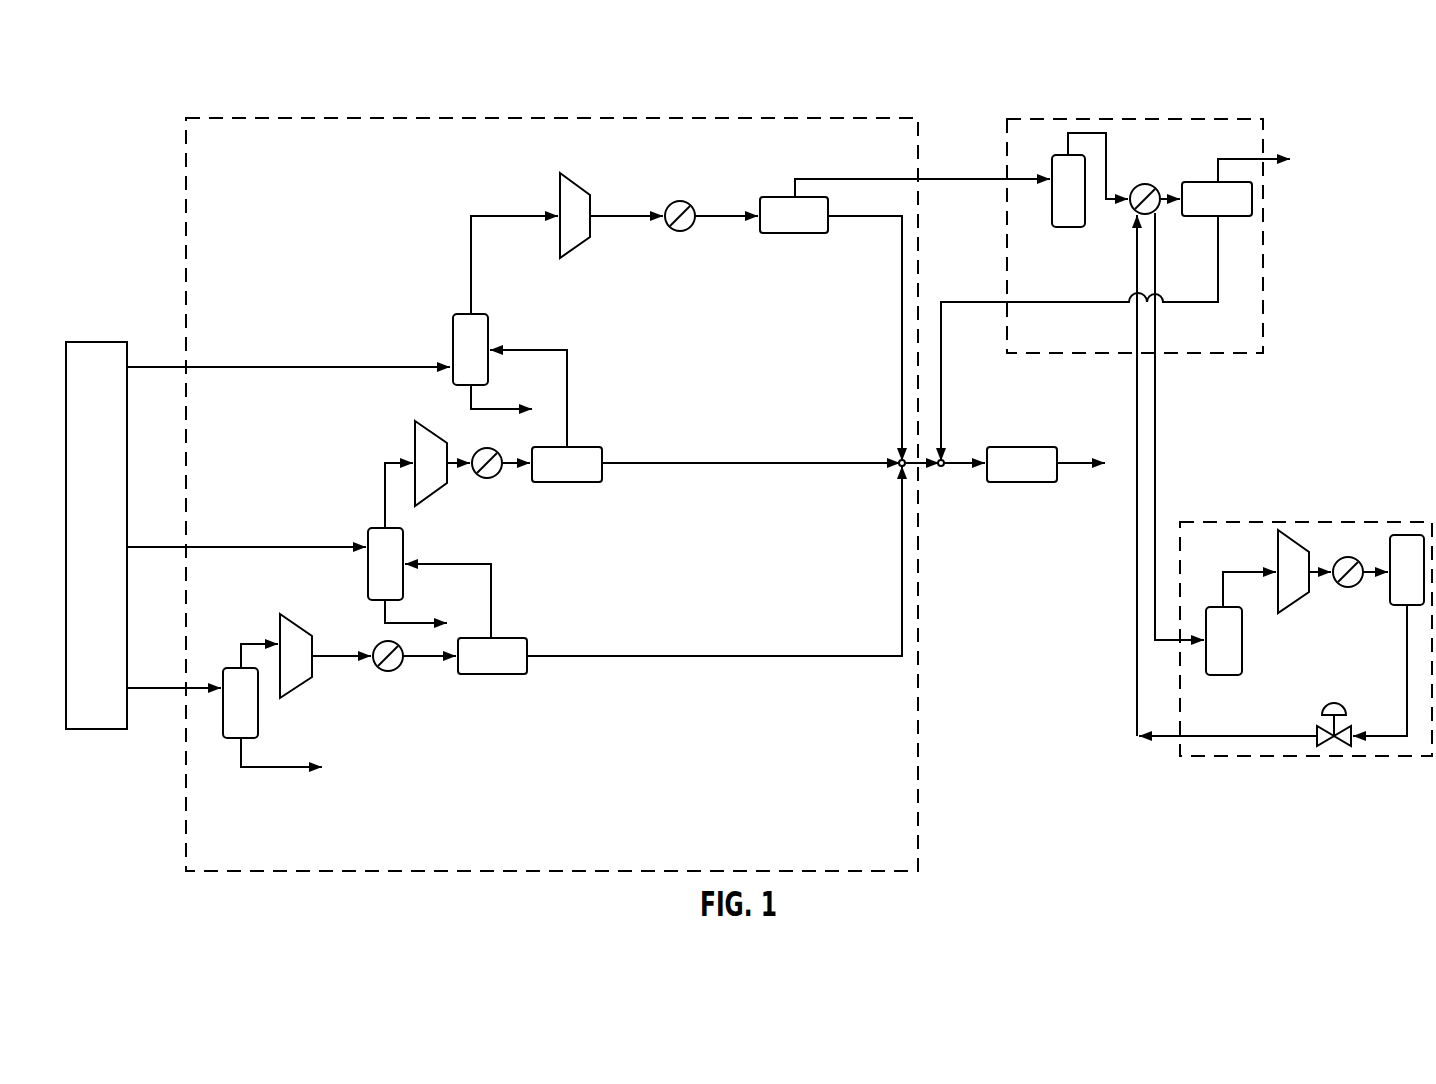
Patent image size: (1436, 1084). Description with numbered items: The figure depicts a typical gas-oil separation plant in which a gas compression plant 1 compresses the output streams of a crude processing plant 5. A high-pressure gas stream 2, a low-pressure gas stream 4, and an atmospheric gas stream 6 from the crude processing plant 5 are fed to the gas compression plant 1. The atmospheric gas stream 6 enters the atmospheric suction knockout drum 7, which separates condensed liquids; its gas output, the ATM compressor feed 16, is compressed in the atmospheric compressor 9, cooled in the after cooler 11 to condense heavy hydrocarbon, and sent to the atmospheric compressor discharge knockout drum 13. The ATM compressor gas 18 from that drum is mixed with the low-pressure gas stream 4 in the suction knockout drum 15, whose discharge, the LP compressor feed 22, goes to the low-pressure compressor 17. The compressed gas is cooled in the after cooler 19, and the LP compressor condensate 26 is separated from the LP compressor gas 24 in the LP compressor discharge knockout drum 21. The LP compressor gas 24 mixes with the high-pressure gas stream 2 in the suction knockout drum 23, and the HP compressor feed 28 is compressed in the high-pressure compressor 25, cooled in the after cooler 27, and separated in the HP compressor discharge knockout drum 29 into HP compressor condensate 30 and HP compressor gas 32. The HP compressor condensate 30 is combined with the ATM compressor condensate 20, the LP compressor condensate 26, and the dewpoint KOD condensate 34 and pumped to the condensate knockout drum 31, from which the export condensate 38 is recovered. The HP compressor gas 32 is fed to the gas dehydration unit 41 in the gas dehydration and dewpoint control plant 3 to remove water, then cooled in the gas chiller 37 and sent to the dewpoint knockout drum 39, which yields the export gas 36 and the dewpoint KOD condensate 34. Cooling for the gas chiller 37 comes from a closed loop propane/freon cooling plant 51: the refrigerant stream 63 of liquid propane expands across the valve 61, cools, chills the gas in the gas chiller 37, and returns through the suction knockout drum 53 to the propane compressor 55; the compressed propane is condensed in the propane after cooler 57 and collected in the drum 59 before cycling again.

The gas compression plant 1 is at (245, 117).
The high-pressure gas stream 2 is at (165, 367).
The gas dehydration and dewpoint control plant 3 is at (1040, 119).
The low-pressure gas stream 4 is at (165, 547).
The crude processing plant 5 is at (97, 342).
The atmospheric gas stream 6 is at (165, 688).
The atmospheric suction knockout drum 7 is at (258, 716).
The atmospheric compressor 9 is at (284, 615).
The after cooler 11 is at (388, 672).
The atmospheric compressor discharge knockout drum 13 is at (490, 675).
The suction knockout drum 15 is at (365, 537).
The ATM compressor feed 16 is at (248, 644).
The low-pressure compressor 17 is at (415, 433).
The ATM compressor gas 18 is at (491, 560).
The after cooler 19 is at (488, 480).
The ATM compressor condensate 20 is at (702, 657).
The LP compressor discharge knockout drum 21 is at (567, 483).
The LP compressor feed 22 is at (385, 487).
The suction knockout drum 23 is at (453, 350).
The LP compressor gas 24 is at (533, 350).
The high-pressure compressor 25 is at (582, 190).
The LP compressor condensate 26 is at (707, 463).
The after cooler 27 is at (683, 233).
The HP compressor feed 28 is at (522, 216).
The HP compressor discharge knockout drum 29 is at (795, 234).
The HP compressor condensate 30 is at (902, 340).
The condensate knockout drum 31 is at (1023, 483).
The HP compressor gas 32 is at (896, 179).
The dewpoint KOD condensate 34 is at (1218, 248).
The export gas 36 is at (1268, 159).
The gas chiller 37 is at (1135, 212).
The export condensate 38 is at (1077, 463).
The dewpoint knockout drum 39 is at (1213, 182).
The gas dehydration unit 41 is at (1052, 198).
The propane/freon cooling plant 51 is at (1240, 522).
The suction knockout drum 53 is at (1242, 655).
The propane compressor 55 is at (1277, 557).
The propane after cooler 57 is at (1352, 587).
The drum 59 is at (1390, 557).
The valve 61 is at (1336, 743).
The refrigerant stream 63 is at (1137, 690).